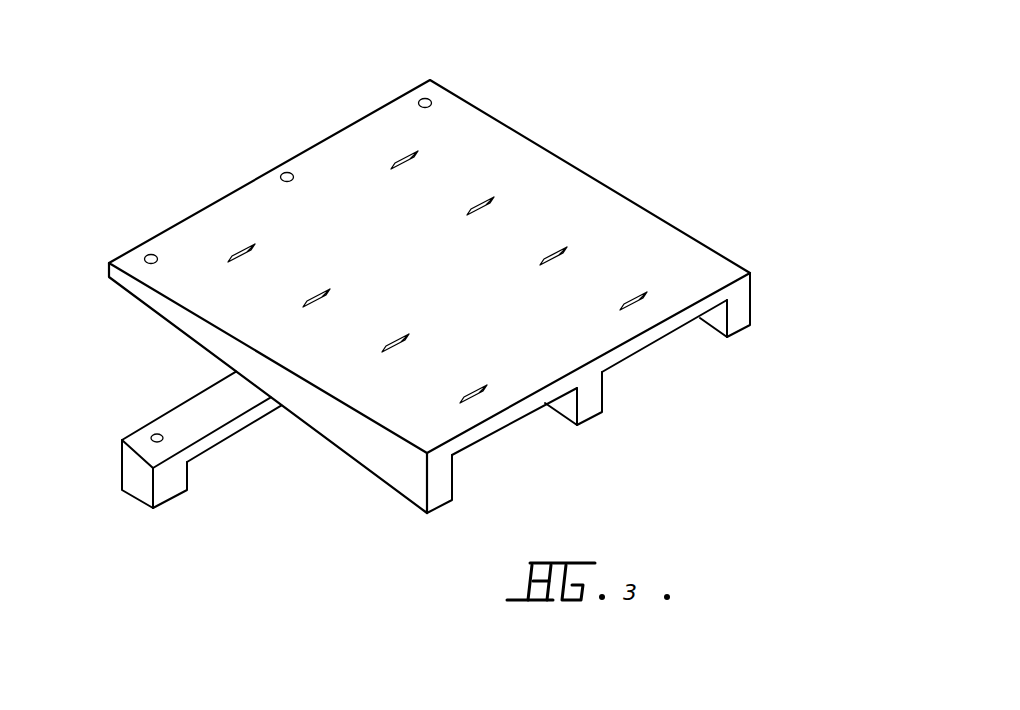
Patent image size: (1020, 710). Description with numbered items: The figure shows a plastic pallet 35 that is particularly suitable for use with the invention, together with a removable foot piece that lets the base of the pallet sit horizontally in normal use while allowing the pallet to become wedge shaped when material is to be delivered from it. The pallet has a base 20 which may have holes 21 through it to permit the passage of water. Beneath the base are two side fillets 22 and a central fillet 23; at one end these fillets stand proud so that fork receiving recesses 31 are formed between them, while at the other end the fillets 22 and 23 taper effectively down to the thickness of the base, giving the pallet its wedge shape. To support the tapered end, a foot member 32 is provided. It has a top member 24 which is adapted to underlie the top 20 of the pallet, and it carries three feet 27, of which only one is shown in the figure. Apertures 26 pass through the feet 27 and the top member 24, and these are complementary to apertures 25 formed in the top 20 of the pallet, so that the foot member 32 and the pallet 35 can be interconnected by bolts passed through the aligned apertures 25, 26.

The base 20 is at (572, 195).
The holes 21 is at (467, 211).
The side fillets 22 is at (348, 442).
The central fillet 23 is at (588, 407).
The top member 24 is at (222, 408).
The apertures 25 is at (282, 177).
The apertures 26 is at (153, 434).
The feet 27 is at (125, 478).
The fork receiving recesses 31 is at (507, 435).
The foot member 32 is at (152, 449).
The plastic pallet 35 is at (435, 287).